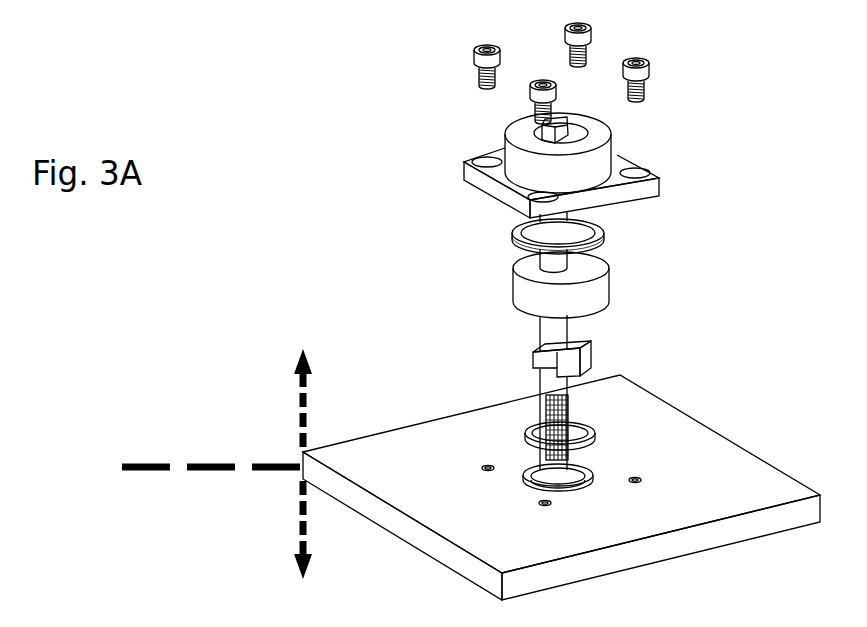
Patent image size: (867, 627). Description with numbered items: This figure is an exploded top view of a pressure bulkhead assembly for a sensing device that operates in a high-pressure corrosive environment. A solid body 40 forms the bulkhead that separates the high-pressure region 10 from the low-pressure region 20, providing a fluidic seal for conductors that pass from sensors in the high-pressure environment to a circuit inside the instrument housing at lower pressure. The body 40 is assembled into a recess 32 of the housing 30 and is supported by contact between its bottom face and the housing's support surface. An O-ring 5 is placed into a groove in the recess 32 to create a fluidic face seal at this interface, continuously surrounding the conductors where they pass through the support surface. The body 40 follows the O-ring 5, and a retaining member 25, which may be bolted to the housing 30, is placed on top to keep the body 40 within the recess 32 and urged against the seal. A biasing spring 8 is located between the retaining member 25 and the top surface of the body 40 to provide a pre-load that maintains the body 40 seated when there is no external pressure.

The O-ring 5 is at (603, 437).
The biasing spring 8 is at (600, 237).
The high-pressure region 10 is at (281, 400).
The low-pressure region 20 is at (281, 530).
The retaining member 25 is at (483, 131).
The housing 30 is at (763, 501).
The recess 32 is at (578, 488).
The body 40 is at (454, 285).